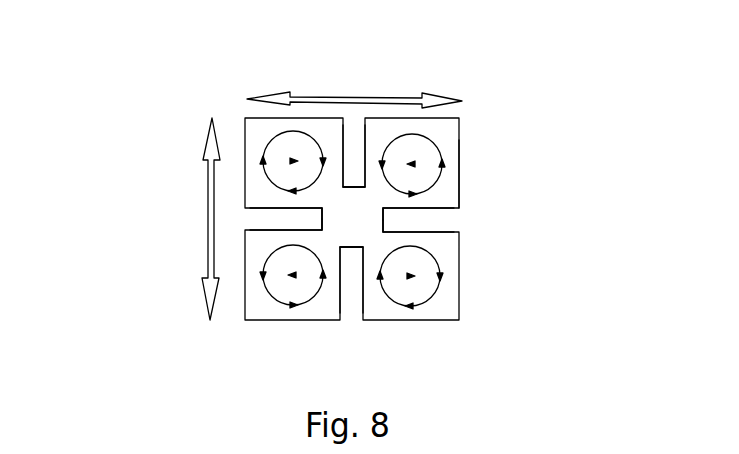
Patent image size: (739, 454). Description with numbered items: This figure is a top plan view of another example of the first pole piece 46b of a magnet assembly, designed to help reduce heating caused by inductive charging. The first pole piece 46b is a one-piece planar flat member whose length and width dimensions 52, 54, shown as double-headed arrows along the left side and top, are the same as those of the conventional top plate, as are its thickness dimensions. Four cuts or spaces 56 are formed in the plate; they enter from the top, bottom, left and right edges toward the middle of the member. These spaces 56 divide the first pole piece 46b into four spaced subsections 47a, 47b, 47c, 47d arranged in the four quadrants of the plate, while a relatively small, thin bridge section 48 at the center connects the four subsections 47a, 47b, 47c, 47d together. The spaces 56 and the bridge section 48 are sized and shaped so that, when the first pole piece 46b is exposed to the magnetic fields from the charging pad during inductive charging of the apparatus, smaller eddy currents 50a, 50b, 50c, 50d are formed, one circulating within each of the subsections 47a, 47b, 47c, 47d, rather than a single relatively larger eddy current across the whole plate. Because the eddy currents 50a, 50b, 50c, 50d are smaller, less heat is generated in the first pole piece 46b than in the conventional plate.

The first pole piece 46b is at (457, 168).
The subsection 47a is at (262, 319).
The subsection 47b is at (245, 118).
The subsection 47c is at (460, 135).
The subsection 47d is at (460, 262).
The bridge section 48 is at (365, 218).
The eddy current 50a is at (297, 307).
The eddy current 50b is at (278, 128).
The eddy current 50c is at (442, 178).
The eddy current 50d is at (458, 290).
The length dimension 52 is at (203, 198).
The width dimension 54 is at (427, 103).
The space 56 is at (347, 145).